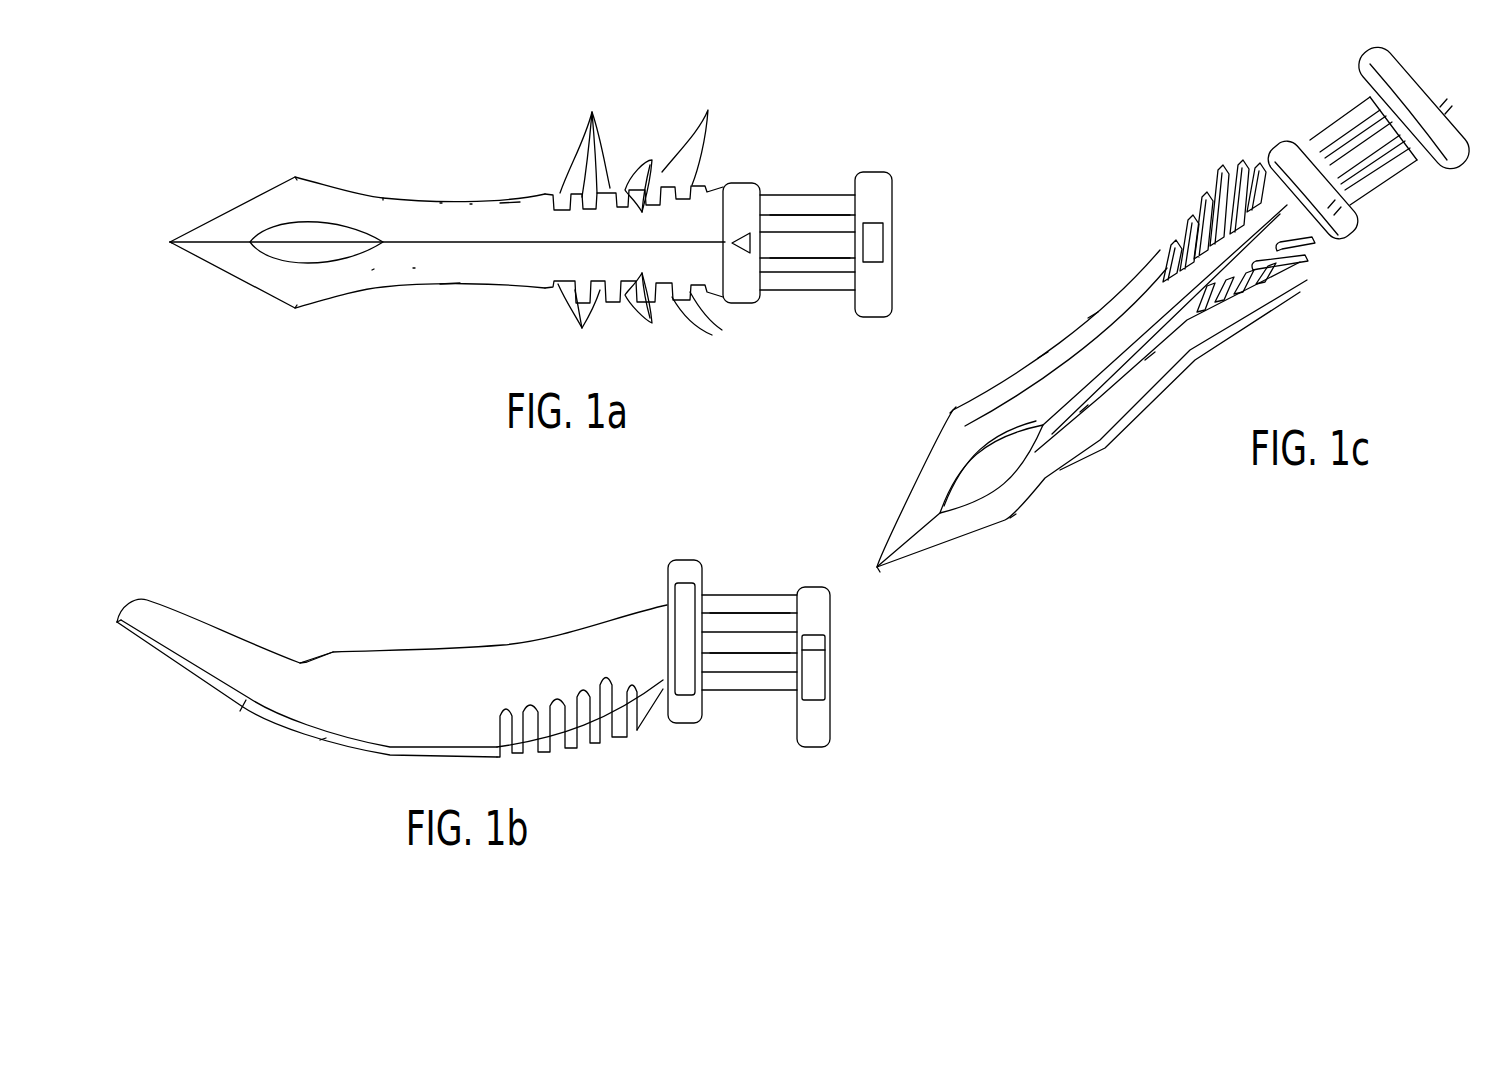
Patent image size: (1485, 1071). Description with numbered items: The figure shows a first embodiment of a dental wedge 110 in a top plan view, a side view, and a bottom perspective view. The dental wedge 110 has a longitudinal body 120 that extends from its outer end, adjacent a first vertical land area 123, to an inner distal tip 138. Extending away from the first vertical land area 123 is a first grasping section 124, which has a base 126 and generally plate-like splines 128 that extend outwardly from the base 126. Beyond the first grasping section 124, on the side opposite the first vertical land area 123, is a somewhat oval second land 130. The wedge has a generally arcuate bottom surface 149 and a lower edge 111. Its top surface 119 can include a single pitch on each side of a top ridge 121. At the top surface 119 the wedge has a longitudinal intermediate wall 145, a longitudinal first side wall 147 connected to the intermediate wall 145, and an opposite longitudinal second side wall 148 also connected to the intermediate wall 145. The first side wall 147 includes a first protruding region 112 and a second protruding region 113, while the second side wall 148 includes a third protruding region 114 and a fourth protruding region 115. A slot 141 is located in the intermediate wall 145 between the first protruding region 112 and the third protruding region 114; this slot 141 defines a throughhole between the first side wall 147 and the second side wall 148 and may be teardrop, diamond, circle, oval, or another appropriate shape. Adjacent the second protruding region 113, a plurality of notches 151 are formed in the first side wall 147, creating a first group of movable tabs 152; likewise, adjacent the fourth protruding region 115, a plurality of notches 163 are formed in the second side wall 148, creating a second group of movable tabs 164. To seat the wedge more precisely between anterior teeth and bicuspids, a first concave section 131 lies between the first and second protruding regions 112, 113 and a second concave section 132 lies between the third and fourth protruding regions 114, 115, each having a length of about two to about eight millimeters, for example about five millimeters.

In FIG. 1A, the dental wedge 110 is at (476, 148).
In FIG. 1B, the dental wedge 110 is at (390, 585).
In FIG. 1C, the dental wedge 110 is at (1162, 430).
In FIG. 1B, the lower edge 111 is at (242, 705).
In FIG. 1A, the first protruding region 112 is at (289, 164).
In FIG. 1C, the first protruding region 112 is at (1020, 526).
In FIG. 1A, the second protruding region 113 is at (661, 137).
In FIG. 1C, the second protruding region 113 is at (1297, 314).
In FIG. 1A, the third protruding region 114 is at (289, 321).
In FIG. 1C, the third protruding region 114 is at (940, 406).
In FIG. 1A, the fourth protruding region 115 is at (669, 345).
In FIG. 1B, the fourth protruding region 115 is at (620, 767).
In FIG. 1C, the fourth protruding region 115 is at (1220, 146).
In FIG. 1A, the top surface 119 is at (502, 234).
In FIG. 1B, the top surface 119 is at (394, 712).
In FIG. 1A, the longitudinal body 120 is at (372, 268).
In FIG. 1A, the top ridge 121 is at (402, 241).
In FIG. 1A, the first vertical land area 123 is at (738, 193).
In FIG. 1B, the first vertical land area 123 is at (685, 578).
In FIG. 1C, the first vertical land area 123 is at (1297, 152).
In FIG. 1A, the first grasping section 124 is at (802, 155).
In FIG. 1B, the first grasping section 124 is at (743, 577).
In FIG. 1C, the first grasping section 124 is at (1372, 217).
In FIG. 1A, the base 126 is at (830, 220).
In FIG. 1B, the base 126 is at (775, 620).
In FIG. 1C, the base 126 is at (1372, 117).
In FIG. 1A, the splines 128 is at (800, 205).
In FIG. 1B, the splines 128 is at (765, 600).
In FIG. 1C, the splines 128 is at (1392, 192).
In FIG. 1A, the second land 130 is at (878, 300).
In FIG. 1B, the second land 130 is at (812, 738).
In FIG. 1C, the second land 130 is at (1432, 96).
In FIG. 1A, the first concave section 131 is at (507, 201).
In FIG. 1C, the first concave section 131 is at (1150, 353).
In FIG. 1A, the second concave section 132 is at (440, 284).
In FIG. 1C, the second concave section 132 is at (1093, 316).
In FIG. 1A, the inner distal tip 138 is at (170, 250).
In FIG. 1B, the inner distal tip 138 is at (118, 624).
In FIG. 1C, the inner distal tip 138 is at (894, 583).
In FIG. 1A, the slot 141 is at (308, 242).
In FIG. 1B, the slot 141 is at (303, 650).
In FIG. 1C, the slot 141 is at (983, 480).
In FIG. 1A, the longitudinal intermediate wall 145 is at (442, 235).
In FIG. 1A, the longitudinal first side wall 147 is at (470, 215).
In FIG. 1C, the longitudinal first side wall 147 is at (1085, 408).
In FIG. 1A, the longitudinal second side wall 148 is at (413, 268).
In FIG. 1B, the longitudinal second side wall 148 is at (324, 720).
In FIG. 1C, the longitudinal second side wall 148 is at (1042, 358).
In FIG. 1C, the bottom surface 149 is at (1065, 377).
In FIG. 1A, the notches 151 is at (591, 128).
In FIG. 1A, the first group of movable tabs 152 is at (597, 207).
In FIG. 1A, the notches 163 is at (612, 305).
In FIG. 1A, the second group of movable tabs 164 is at (597, 279).